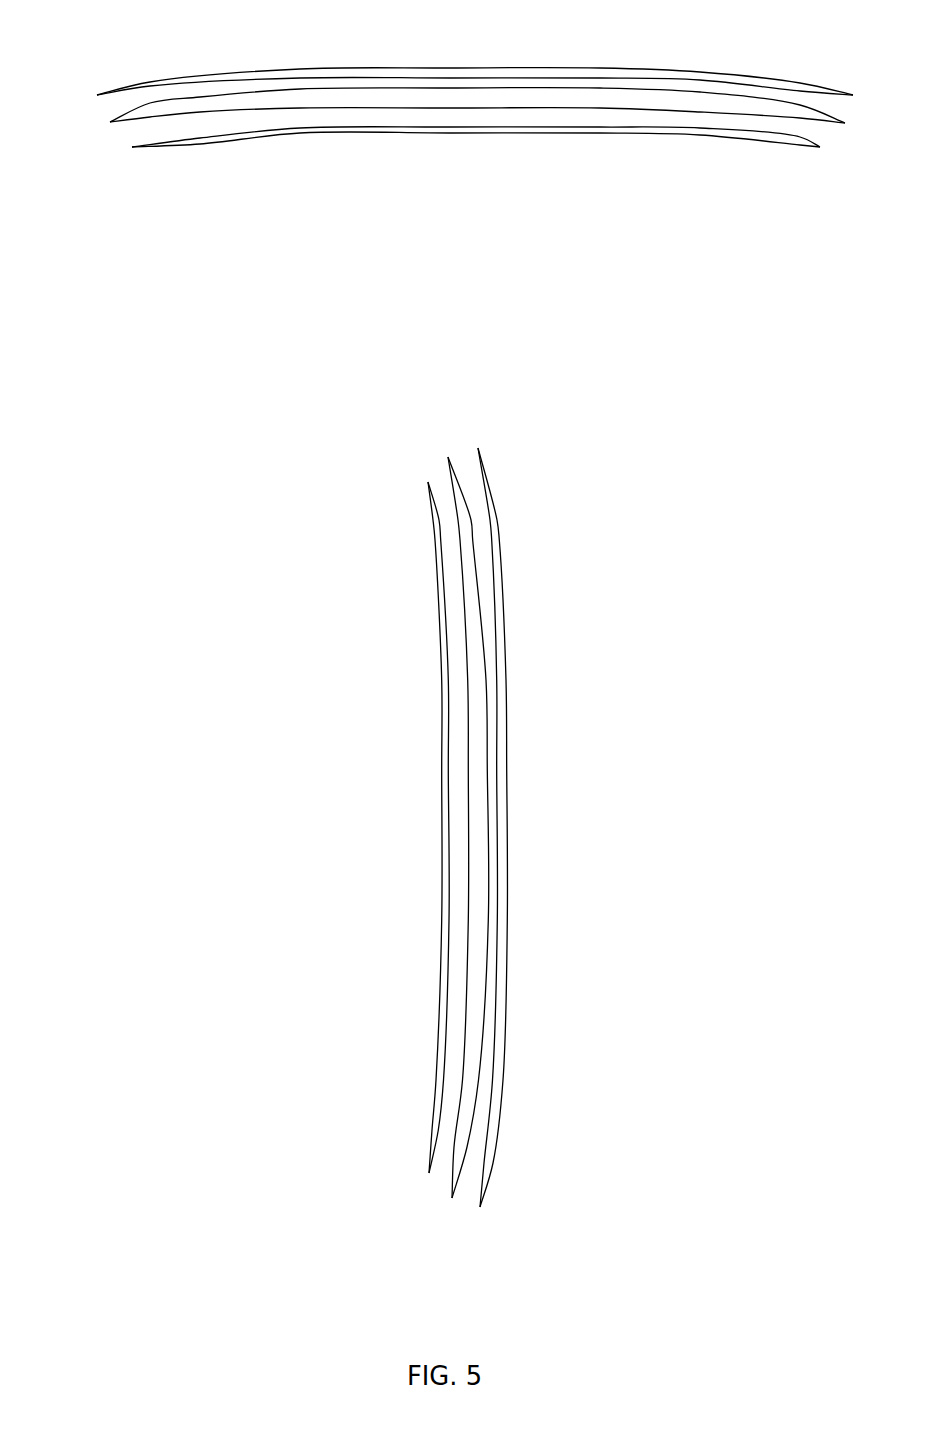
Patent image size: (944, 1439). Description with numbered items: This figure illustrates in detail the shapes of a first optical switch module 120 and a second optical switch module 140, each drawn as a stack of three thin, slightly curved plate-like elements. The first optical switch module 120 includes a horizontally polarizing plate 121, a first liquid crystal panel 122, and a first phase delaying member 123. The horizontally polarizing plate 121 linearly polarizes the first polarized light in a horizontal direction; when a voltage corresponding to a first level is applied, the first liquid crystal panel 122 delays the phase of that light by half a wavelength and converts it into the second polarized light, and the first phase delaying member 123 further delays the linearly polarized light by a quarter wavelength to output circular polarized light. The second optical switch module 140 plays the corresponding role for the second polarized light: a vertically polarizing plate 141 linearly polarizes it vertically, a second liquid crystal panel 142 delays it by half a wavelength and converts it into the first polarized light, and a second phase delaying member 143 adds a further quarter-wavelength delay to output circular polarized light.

The first optical switch module 120 is at (88, 31).
The horizontally polarizing plate 121 is at (132, 147).
The first liquid crystal panel 122 is at (110, 122).
The first phase delaying member 123 is at (97, 95).
The second optical switch module 140 is at (79, 359).
The vertically polarizing plate 141 is at (428, 482).
The second liquid crystal panel 142 is at (448, 457).
The second phase delaying member 143 is at (478, 448).